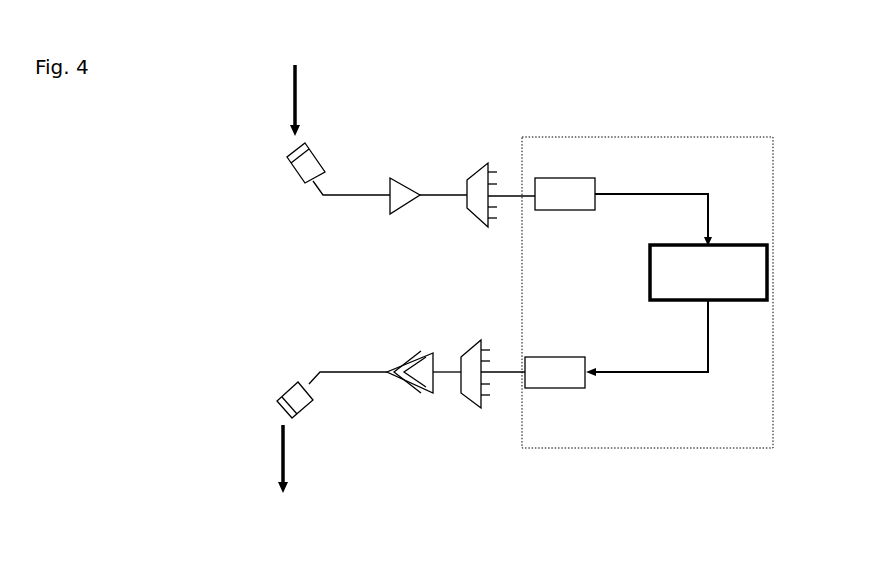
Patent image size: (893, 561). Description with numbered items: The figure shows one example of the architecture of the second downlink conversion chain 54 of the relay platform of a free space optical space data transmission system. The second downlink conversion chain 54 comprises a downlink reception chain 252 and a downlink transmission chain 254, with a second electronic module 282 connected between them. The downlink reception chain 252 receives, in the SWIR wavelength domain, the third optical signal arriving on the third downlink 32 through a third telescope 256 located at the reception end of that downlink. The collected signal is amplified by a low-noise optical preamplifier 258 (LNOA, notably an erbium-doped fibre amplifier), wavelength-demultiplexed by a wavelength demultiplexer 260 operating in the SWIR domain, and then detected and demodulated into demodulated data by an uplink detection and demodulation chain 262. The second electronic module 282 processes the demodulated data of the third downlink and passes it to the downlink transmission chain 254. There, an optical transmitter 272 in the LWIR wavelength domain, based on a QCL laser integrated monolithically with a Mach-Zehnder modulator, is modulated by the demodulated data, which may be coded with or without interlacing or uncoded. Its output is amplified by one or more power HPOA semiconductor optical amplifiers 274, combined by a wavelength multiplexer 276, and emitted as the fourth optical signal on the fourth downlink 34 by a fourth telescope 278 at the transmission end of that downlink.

The second downlink conversion chain 54 is at (394, 56).
The third downlink 32 is at (297, 110).
The fourth downlink 34 is at (284, 462).
The downlink reception chain 252 is at (441, 159).
The downlink transmission chain 254 is at (438, 456).
The third telescope 256 is at (290, 164).
The low-noise optical preamplifier 258 is at (391, 206).
The wavelength demultiplexer 260 is at (487, 164).
The uplink detection and demodulation chain 262 is at (560, 178).
The second electronic module 282 is at (676, 310).
The optical transmitter 272 is at (555, 388).
The wavelength multiplexer 276 is at (482, 408).
The power HPOA semiconductor optical amplifier 274 is at (400, 364).
The fourth telescope 278 is at (291, 386).